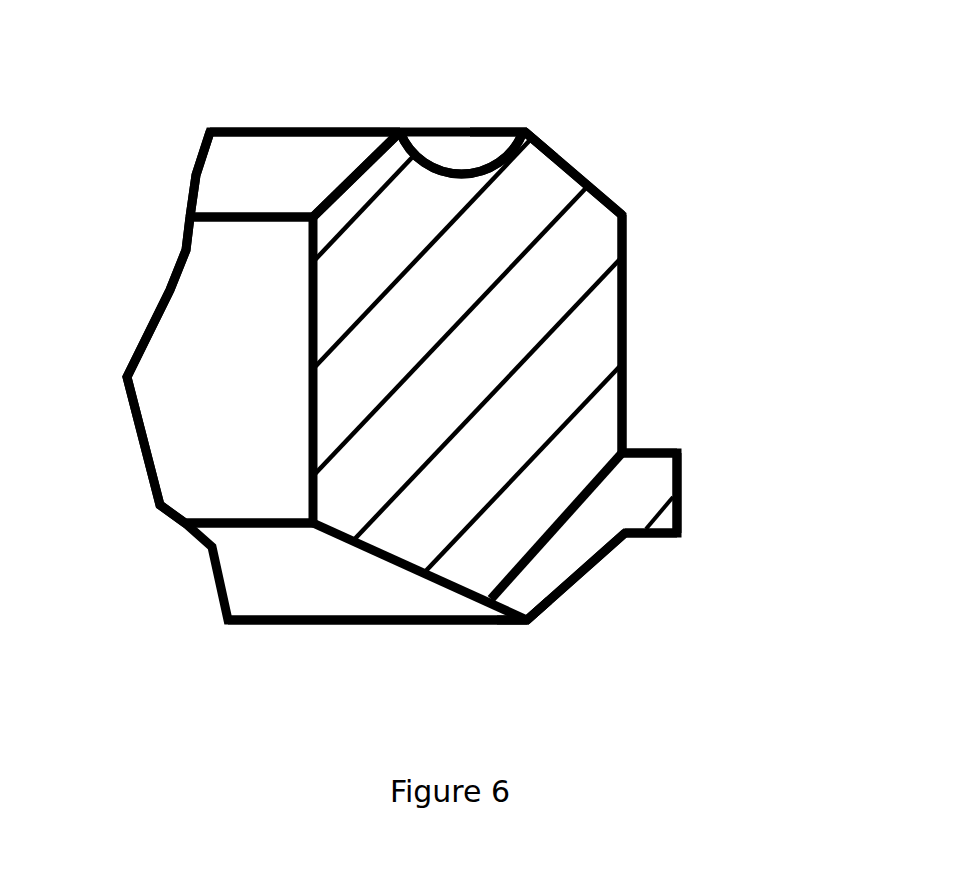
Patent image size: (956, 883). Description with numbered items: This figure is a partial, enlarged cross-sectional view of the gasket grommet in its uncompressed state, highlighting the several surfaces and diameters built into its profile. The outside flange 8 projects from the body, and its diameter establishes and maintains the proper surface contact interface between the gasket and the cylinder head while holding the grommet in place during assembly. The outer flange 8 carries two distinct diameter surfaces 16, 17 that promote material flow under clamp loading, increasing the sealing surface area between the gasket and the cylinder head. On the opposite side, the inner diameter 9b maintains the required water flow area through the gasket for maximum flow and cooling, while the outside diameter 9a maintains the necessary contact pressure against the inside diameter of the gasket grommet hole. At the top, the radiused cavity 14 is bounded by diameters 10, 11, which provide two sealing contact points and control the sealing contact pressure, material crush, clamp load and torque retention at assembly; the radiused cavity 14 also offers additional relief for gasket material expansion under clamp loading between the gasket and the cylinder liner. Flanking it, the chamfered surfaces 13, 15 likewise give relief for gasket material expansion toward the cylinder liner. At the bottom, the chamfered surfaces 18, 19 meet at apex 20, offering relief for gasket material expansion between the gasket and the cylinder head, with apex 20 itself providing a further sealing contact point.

The outside flange 8 is at (699, 488).
The outside diameter 9a is at (658, 304).
The inner diameter 9b is at (189, 295).
The diameter of radiused cavity 10 is at (522, 105).
The diameter of radiused cavity 11 is at (381, 117).
The chamfered surface 13 is at (222, 180).
The radiused cavity 14 is at (445, 139).
The chamfered surface 15 is at (595, 159).
The diameter surface 16 is at (698, 448).
The diameter surface 17 is at (700, 530).
The chamfered surface 18 is at (597, 598).
The chamfered surface 19 is at (364, 649).
The apex 20 is at (536, 647).